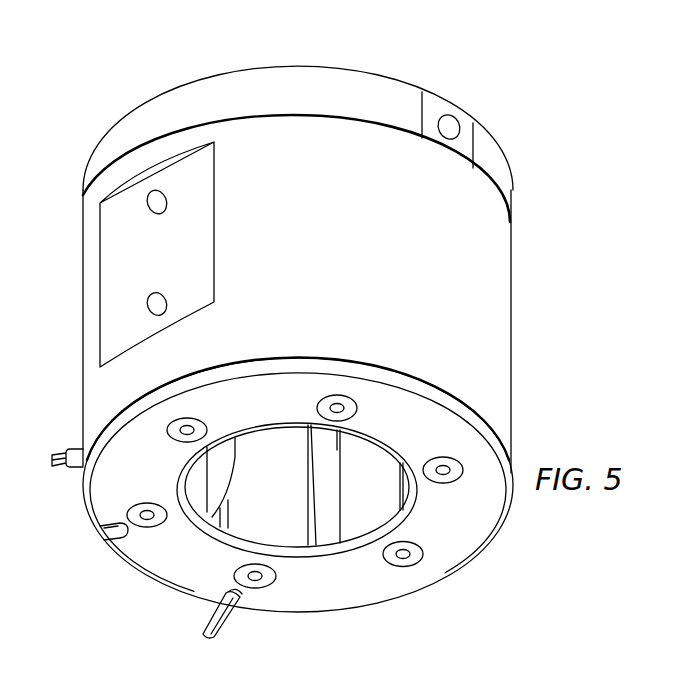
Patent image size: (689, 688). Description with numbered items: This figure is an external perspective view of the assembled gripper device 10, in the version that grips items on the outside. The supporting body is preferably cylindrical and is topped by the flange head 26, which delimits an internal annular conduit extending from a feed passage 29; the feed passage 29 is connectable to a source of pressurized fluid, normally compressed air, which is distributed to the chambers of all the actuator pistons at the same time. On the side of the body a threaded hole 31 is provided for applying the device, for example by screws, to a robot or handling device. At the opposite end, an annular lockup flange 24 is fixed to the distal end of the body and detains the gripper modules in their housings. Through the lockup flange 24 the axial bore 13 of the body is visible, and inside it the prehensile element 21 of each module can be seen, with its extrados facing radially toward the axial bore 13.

The gripper device 10 is at (532, 270).
The flange head 26 is at (305, 83).
The feed passage 29 is at (455, 122).
The threaded hole 31 is at (152, 303).
The annular lockup flange 24 is at (172, 565).
The axial bore 13 is at (378, 488).
The prehensile element 21 is at (328, 523).